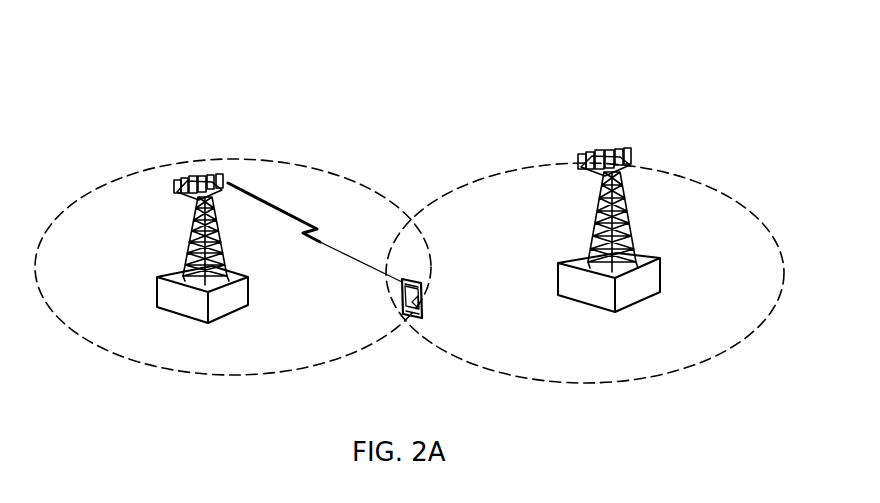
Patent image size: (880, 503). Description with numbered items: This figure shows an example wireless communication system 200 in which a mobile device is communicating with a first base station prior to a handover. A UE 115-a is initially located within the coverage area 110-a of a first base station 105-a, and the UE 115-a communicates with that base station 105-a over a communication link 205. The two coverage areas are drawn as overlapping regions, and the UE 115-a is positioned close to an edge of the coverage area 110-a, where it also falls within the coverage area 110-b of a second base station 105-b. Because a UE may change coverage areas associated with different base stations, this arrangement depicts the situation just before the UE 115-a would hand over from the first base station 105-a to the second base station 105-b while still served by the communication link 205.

The wireless communication system 200 is at (716, 40).
The base station 105-a is at (181, 322).
The second base station 105-b is at (648, 296).
The coverage area 110-a is at (291, 163).
The coverage area 110-b is at (726, 175).
The UE 115-a is at (423, 284).
The communication link 205 is at (319, 244).